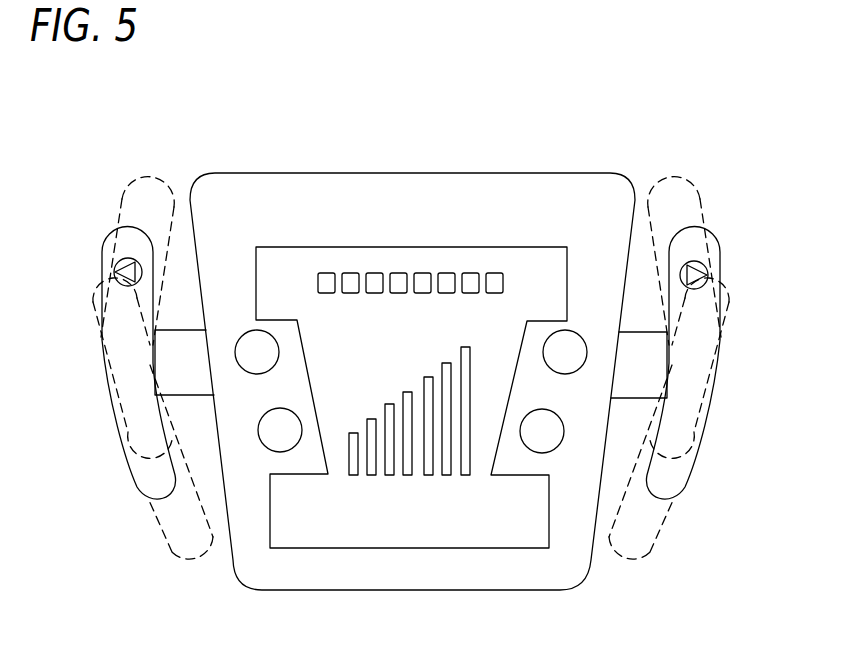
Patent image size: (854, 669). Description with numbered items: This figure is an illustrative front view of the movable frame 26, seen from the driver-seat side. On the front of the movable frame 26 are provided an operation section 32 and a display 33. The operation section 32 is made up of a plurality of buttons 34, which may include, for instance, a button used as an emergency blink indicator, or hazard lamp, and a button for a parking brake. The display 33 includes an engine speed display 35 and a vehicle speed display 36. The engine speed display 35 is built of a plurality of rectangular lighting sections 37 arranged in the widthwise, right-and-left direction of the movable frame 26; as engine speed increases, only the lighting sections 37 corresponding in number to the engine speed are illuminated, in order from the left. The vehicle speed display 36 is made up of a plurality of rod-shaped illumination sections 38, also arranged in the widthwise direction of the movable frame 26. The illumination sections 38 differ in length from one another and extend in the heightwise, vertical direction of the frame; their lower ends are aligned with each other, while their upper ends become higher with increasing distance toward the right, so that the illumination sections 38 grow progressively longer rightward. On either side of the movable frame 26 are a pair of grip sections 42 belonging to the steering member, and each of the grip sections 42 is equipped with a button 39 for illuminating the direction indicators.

The movable frame 26 is at (518, 172).
The operation section 32 is at (558, 458).
The display 33 is at (453, 492).
The buttons 34 is at (280, 430).
The engine speed display 35 is at (330, 269).
The vehicle speed display 36 is at (353, 430).
The rectangular lighting sections 37 is at (399, 293).
The rod-shaped illumination sections 38 is at (371, 475).
The buttons for illuminating direction indicators 39 is at (122, 270).
The grip sections 42 is at (120, 228).